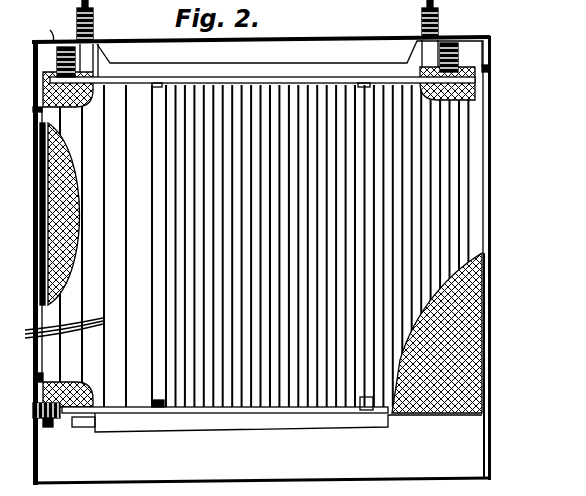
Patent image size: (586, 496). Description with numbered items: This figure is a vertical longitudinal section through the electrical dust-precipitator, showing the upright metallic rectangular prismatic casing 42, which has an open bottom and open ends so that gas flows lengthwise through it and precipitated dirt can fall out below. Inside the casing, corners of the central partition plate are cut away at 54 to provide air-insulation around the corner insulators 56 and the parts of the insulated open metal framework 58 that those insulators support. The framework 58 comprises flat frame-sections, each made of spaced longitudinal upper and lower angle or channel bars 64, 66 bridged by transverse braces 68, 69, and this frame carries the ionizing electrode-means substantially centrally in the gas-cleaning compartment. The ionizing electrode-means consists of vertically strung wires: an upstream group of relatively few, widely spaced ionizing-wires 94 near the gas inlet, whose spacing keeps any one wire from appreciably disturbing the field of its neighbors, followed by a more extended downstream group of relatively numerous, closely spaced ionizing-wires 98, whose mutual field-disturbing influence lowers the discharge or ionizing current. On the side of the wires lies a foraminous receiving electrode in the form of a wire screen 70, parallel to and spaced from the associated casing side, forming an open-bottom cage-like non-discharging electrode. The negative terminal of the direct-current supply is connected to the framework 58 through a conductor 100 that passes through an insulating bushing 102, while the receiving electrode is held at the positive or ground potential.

The casing 42 is at (278, 37).
The cut-away corners 54 is at (33, 97).
The corner insulators 56 is at (52, 432).
The insulated open metal framework 58 is at (43, 80).
The upper angle or channel bar 64 is at (137, 82).
The lower angle or channel bar 66 is at (122, 413).
The transverse brace 68 is at (157, 413).
The transverse brace 69 is at (367, 411).
The screen 70 is at (455, 417).
The ionizing-wires 94 is at (55, 233).
The ionizing-wires 98 is at (236, 97).
The conductor 100 is at (89, 3).
The insulating bushing 102 is at (97, 23).